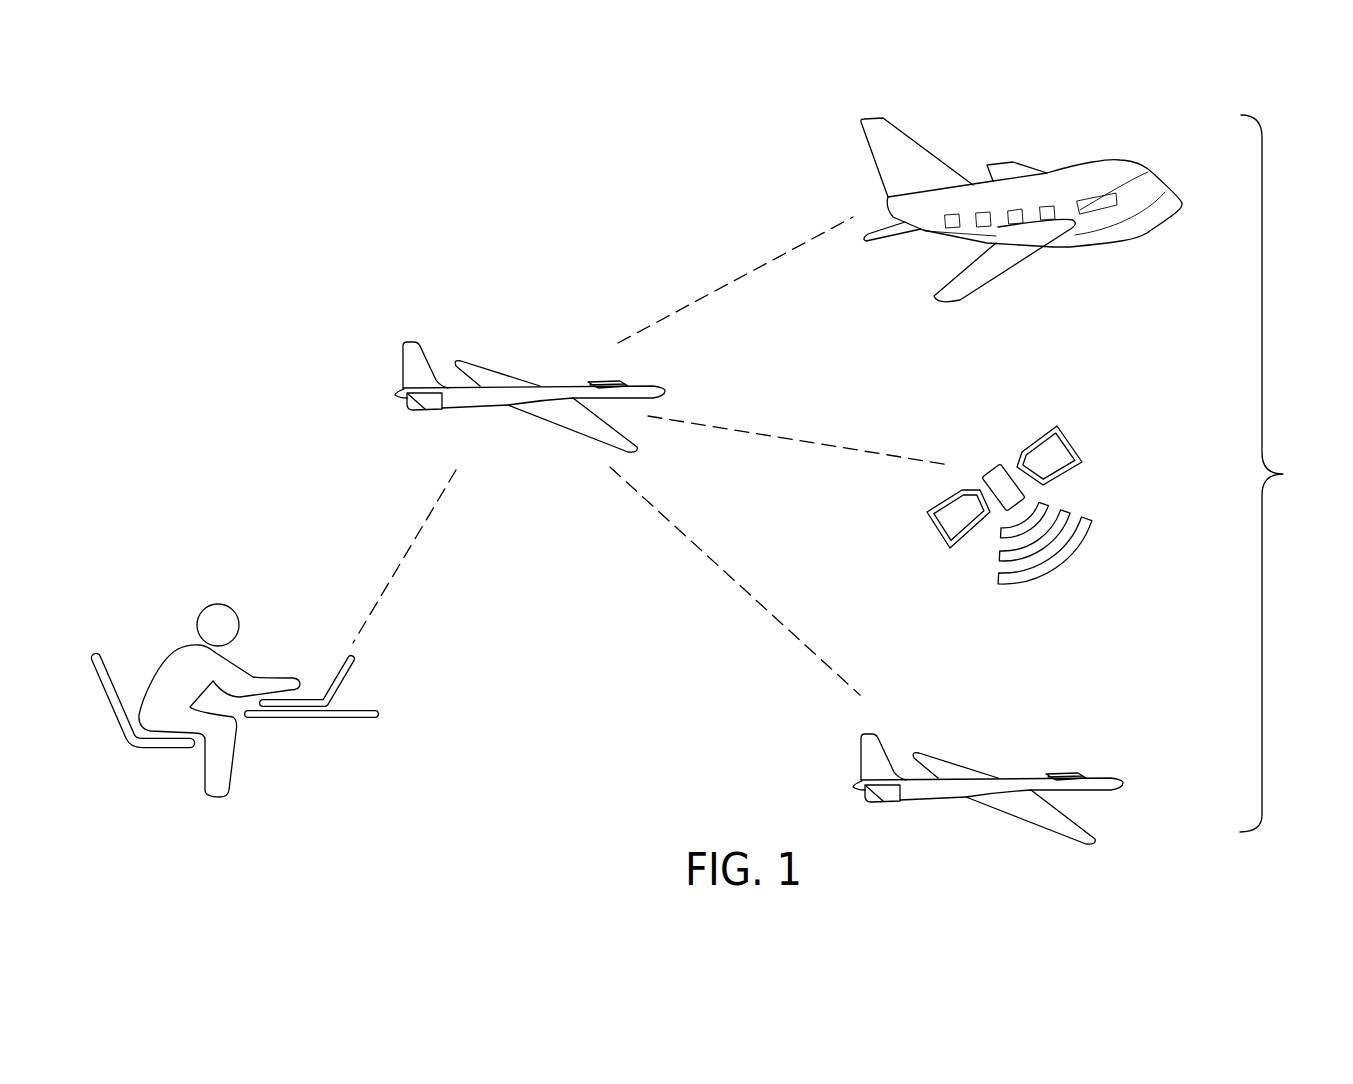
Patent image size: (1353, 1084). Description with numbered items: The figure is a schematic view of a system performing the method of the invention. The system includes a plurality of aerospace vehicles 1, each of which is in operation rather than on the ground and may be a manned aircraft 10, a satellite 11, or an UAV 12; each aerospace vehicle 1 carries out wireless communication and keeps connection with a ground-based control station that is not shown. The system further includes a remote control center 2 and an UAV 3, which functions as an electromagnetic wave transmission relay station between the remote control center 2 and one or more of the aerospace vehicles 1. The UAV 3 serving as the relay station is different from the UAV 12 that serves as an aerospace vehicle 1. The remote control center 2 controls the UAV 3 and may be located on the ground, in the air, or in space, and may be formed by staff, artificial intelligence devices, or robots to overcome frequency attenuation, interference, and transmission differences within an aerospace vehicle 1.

The aerospace vehicle 1 is at (1273, 473).
The remote control center 2 is at (347, 675).
The UAV 3 is at (583, 378).
The manned aircraft 10 is at (1147, 167).
The satellite 11 is at (1070, 443).
The UAV 12 is at (1040, 772).